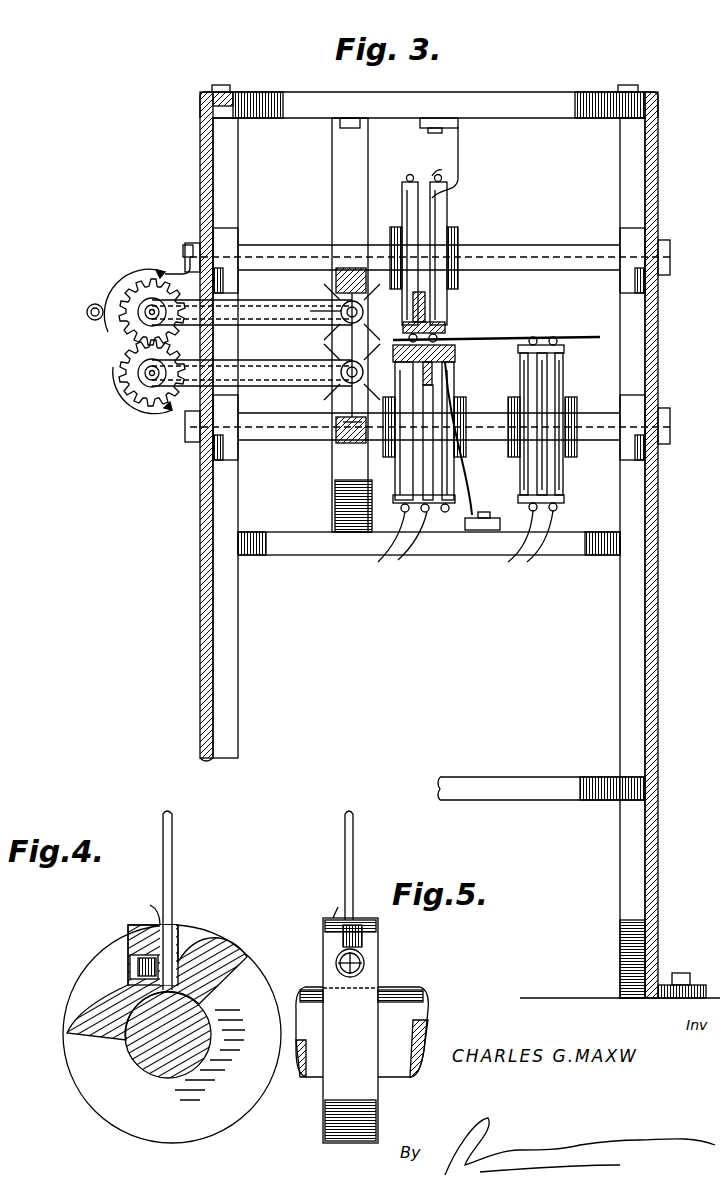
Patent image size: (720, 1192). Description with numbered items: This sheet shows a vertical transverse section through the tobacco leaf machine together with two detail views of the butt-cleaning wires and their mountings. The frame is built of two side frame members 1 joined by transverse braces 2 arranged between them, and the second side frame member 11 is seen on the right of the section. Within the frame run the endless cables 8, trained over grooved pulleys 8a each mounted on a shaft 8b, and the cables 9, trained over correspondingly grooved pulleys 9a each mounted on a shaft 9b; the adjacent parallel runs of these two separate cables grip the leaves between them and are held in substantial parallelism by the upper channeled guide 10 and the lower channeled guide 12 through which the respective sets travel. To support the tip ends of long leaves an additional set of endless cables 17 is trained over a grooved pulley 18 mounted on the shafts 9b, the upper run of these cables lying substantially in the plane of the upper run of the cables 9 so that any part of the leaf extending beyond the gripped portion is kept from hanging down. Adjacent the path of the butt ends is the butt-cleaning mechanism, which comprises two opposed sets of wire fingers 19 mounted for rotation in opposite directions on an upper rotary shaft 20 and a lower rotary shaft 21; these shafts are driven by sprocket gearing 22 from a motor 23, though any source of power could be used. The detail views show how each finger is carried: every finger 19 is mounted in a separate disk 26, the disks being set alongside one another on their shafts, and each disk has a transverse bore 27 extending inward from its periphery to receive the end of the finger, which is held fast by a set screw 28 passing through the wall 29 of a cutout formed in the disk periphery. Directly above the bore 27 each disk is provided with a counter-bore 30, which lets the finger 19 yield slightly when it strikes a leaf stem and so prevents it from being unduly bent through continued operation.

In FIG. 3, the side frame member 1 is at (199, 155).
In FIG. 3, the transverse brace 2 is at (548, 108).
In FIG. 3, the cable 8 is at (412, 177).
In FIG. 3, the grooved pulley 8a is at (458, 237).
In FIG. 3, the shaft 8b is at (553, 252).
In FIG. 3, the cable 9 is at (452, 352).
In FIG. 3, the grooved pulley 9a is at (455, 458).
In FIG. 3, the shaft 9b is at (587, 420).
In FIG. 3, the upper channeled guide 10 is at (496, 322).
In FIG. 3, the right frame post 11 is at (667, 176).
In FIG. 3, the lower channeled guide 12 is at (457, 366).
In FIG. 3, the additional endless cable 17 is at (545, 336).
In FIG. 3, the grooved pulley 18 is at (562, 486).
In FIG. 3, the wire finger 19 is at (335, 305).
In FIG. 4, the wire finger 19 is at (188, 838).
In FIG. 5, the wire finger 19 is at (344, 824).
In FIG. 3, the upper rotary shaft 20 is at (342, 298).
In FIG. 4, the upper rotary shaft 20 is at (152, 1053).
In FIG. 5, the upper rotary shaft 20 is at (397, 1078).
In FIG. 3, the lower rotary shaft 21 is at (346, 380).
In FIG. 3, the sprocket gearing 22 is at (252, 343).
In FIG. 3, the motor 23 is at (140, 322).
In FIG. 4, the disk 26 is at (246, 960).
In FIG. 5, the disk 26 is at (336, 1105).
In FIG. 4, the transverse bore 27 is at (194, 946).
In FIG. 4, the set screw 28 is at (129, 965).
In FIG. 5, the set screw 28 is at (364, 966).
In FIG. 4, the wall 29 is at (130, 930).
In FIG. 5, the wall 29 is at (365, 935).
In FIG. 4, the counter-bore 30 is at (142, 905).
In FIG. 5, the counter-bore 30 is at (321, 902).